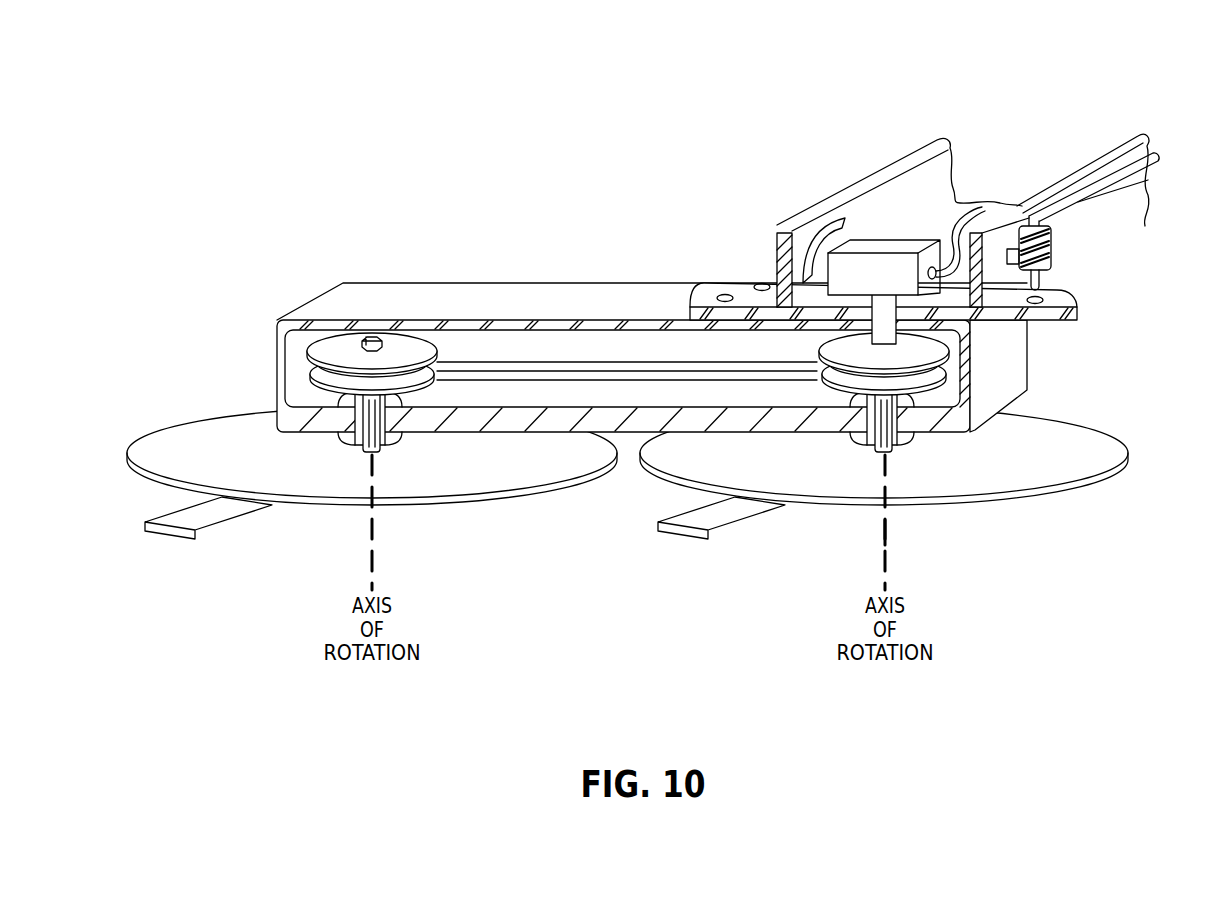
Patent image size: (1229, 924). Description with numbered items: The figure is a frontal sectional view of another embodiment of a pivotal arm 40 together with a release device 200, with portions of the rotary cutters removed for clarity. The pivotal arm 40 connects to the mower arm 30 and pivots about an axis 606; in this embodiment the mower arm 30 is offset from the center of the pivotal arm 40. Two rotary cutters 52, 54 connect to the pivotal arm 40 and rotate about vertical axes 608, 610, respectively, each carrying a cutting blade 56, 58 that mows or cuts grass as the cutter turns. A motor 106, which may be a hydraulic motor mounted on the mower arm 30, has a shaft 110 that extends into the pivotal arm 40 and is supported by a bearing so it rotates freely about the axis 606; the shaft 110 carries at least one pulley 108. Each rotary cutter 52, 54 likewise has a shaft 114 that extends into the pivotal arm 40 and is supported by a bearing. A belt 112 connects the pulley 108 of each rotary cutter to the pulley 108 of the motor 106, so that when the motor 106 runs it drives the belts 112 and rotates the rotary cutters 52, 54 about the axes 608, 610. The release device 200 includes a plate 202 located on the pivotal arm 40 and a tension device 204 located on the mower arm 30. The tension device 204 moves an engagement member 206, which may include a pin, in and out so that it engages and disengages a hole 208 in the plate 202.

The release device 200 is at (668, 314).
The mower arm 30 is at (925, 146).
The pivotal arm 40 is at (463, 282).
The rotary cutter 52 is at (241, 477).
The rotary cutter 54 is at (960, 477).
The cutting blade 56 is at (200, 541).
The cutting blade 58 is at (714, 541).
The motor 106 is at (873, 246).
The pulley 108 is at (342, 347).
The shaft 110 is at (885, 341).
The belt 112 is at (485, 377).
The shaft 114 is at (362, 452).
The plate 202 is at (752, 279).
The tension device 204 is at (1052, 226).
The engagement member 206 is at (1042, 277).
The hole 208 is at (712, 299).
The axis 606 is at (886, 550).
The axis 608 is at (884, 533).
The axis 610 is at (373, 550).